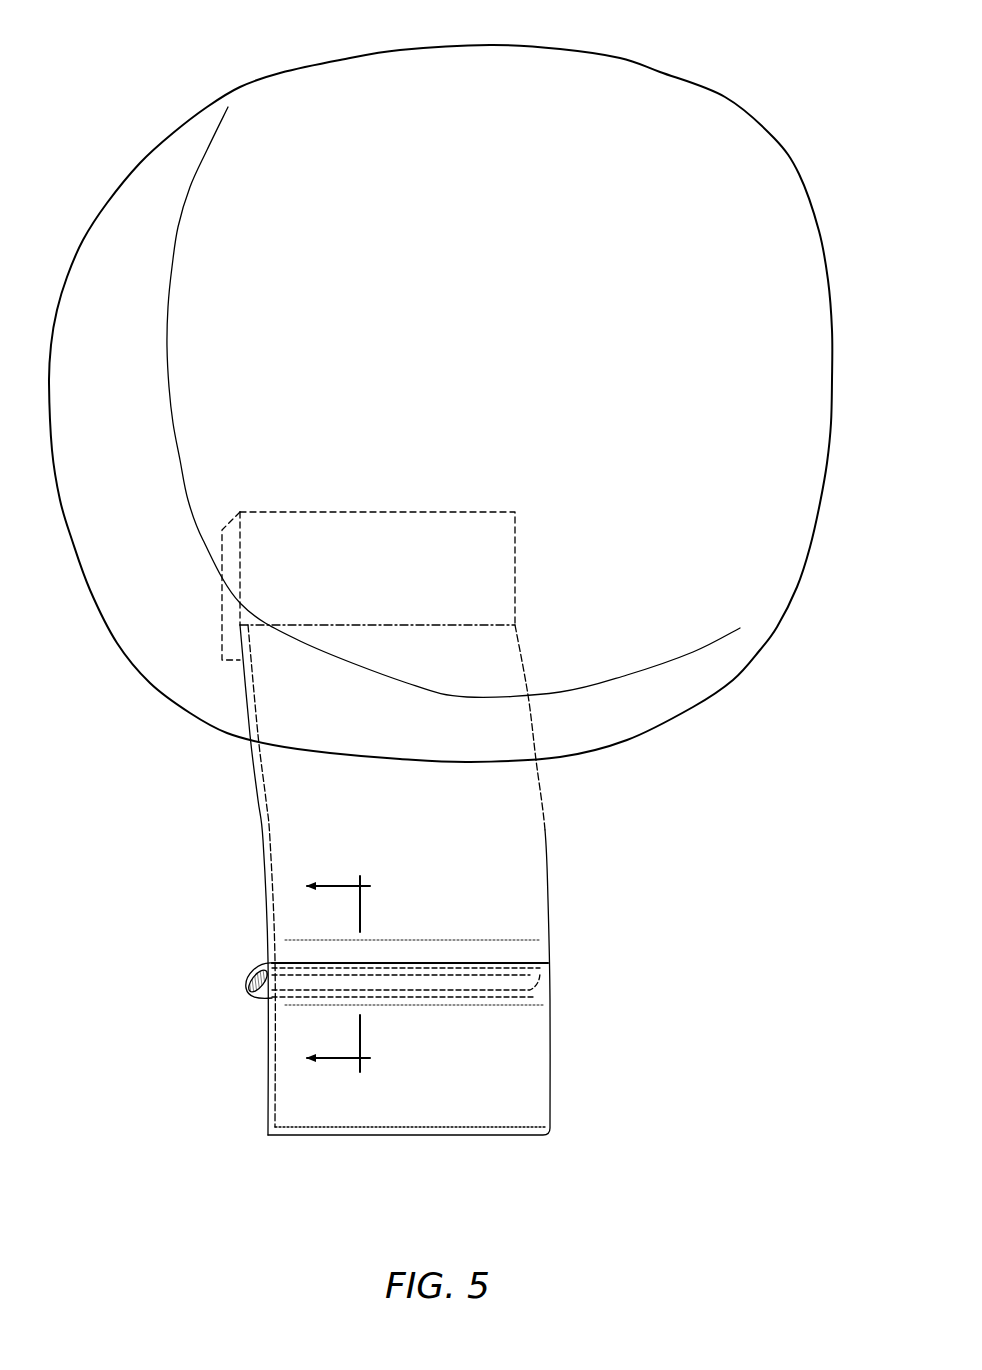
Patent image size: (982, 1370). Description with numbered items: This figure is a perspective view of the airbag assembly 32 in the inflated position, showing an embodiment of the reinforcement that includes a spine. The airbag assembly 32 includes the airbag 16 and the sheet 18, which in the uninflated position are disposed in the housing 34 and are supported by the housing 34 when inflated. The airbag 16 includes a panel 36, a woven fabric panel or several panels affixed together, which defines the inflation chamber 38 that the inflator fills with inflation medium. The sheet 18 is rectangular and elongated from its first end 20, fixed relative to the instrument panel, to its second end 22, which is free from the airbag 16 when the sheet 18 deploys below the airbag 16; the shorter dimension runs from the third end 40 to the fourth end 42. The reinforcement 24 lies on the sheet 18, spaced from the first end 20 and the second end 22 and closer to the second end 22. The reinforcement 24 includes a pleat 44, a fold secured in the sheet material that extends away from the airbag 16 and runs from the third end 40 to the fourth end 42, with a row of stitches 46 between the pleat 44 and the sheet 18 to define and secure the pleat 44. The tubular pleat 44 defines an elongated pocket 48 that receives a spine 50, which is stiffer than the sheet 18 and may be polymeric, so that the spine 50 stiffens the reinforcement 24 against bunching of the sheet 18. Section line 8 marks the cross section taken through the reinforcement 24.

The airbag 16 is at (141, 118).
The sheet 18 is at (548, 835).
The first end 20 is at (237, 648).
The second end 22 is at (505, 1137).
The reinforcement 24 is at (236, 981).
The airbag assembly 32 is at (121, 692).
The housing 34 is at (222, 625).
The panel 36 is at (620, 58).
The inflation chamber 38 is at (660, 148).
The third end 40 is at (548, 896).
The fourth end 42 is at (262, 840).
The pleat 44 is at (250, 997).
The row of stitches 46 is at (548, 967).
The pocket 48 is at (265, 965).
The spine 50 is at (470, 978).
The section line 8- 8 is at (349, 974).